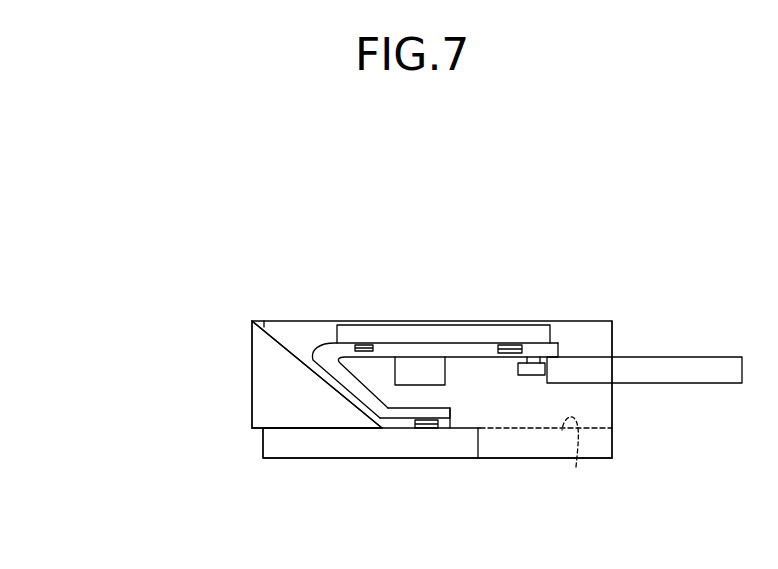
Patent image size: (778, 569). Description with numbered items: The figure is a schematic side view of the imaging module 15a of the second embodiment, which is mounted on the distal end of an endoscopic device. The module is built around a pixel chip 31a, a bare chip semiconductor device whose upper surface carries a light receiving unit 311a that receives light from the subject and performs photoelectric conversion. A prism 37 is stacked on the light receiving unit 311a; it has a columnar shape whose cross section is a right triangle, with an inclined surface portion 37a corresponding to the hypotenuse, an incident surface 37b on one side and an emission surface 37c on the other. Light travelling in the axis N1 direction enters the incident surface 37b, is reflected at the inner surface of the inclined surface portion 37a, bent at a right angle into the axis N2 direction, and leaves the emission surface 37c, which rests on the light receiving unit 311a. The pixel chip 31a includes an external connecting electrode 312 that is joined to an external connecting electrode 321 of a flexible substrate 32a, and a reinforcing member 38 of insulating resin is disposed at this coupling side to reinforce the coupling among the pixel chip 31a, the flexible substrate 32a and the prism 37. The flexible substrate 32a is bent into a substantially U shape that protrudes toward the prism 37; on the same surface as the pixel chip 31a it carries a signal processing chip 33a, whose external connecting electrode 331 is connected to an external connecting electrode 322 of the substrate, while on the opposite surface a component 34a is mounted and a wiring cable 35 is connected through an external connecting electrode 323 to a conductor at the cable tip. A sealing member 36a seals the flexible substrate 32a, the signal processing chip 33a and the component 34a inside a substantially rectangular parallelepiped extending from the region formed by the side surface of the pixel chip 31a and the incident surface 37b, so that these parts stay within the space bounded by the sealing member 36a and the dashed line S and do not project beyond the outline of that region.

The imaging module 15a is at (673, 224).
The pixel chip 31a is at (281, 452).
The light receiving unit 311a is at (290, 427).
The external connecting electrode 312 is at (424, 422).
The flexible substrate 32a is at (340, 375).
The external connecting electrode 321 is at (447, 408).
The external connecting electrode 322 is at (514, 360).
The external connecting electrode 323 is at (540, 335).
The signal processing chip 33a is at (383, 336).
The external connecting electrode 331 is at (511, 345).
The component 34a is at (430, 377).
The wiring cable 35 is at (679, 360).
The sealing member 36a is at (605, 413).
The prism 37 is at (268, 360).
The inclined surface portion 37a is at (283, 344).
The incident surface 37b is at (252, 407).
The emission surface 37c is at (360, 429).
The reinforcing member 38 is at (392, 419).
The axis N1 is at (227, 385).
The axis N2 is at (309, 385).
The dashed line S is at (576, 468).